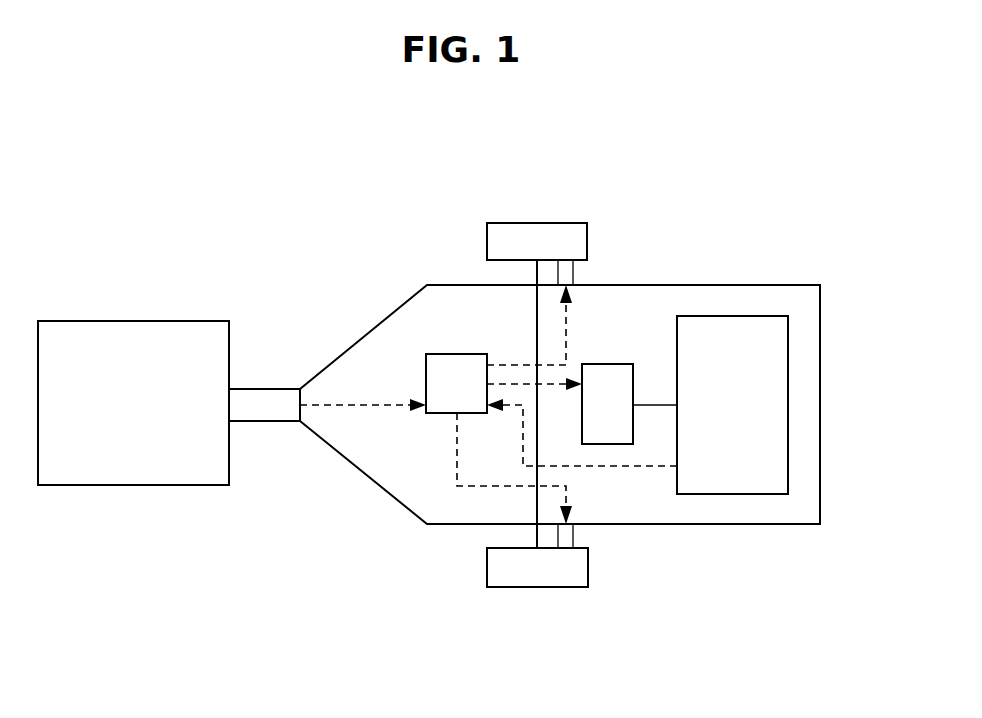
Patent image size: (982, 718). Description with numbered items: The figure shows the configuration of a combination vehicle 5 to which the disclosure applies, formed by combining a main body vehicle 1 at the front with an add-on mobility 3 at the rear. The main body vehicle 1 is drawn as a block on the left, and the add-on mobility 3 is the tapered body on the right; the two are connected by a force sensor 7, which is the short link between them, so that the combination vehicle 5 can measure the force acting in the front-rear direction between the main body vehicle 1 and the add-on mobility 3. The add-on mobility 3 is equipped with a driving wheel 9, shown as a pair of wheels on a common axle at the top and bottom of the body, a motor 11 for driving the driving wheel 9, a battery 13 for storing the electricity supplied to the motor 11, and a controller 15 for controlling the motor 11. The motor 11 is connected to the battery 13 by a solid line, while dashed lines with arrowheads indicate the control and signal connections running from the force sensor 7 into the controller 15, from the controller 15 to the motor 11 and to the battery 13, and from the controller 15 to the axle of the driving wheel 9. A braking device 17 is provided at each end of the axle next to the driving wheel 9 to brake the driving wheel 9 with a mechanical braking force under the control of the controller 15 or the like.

The main body vehicle 1 is at (113, 321).
The add-on mobility 3 is at (348, 350).
The combination vehicle 5 is at (102, 216).
The force sensor 7 is at (265, 421).
The driving wheel 9 is at (537, 223).
The motor 11 is at (633, 386).
The battery 13 is at (754, 494).
The controller 15 is at (452, 354).
The braking device 17 is at (574, 270).